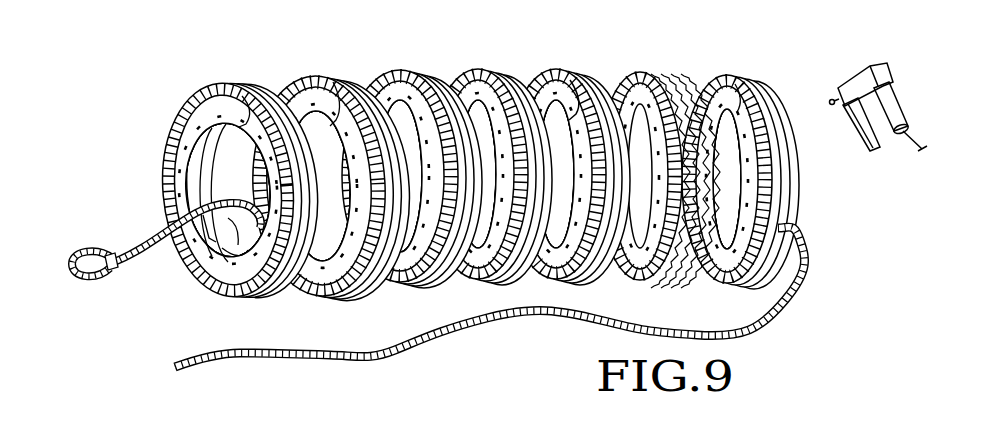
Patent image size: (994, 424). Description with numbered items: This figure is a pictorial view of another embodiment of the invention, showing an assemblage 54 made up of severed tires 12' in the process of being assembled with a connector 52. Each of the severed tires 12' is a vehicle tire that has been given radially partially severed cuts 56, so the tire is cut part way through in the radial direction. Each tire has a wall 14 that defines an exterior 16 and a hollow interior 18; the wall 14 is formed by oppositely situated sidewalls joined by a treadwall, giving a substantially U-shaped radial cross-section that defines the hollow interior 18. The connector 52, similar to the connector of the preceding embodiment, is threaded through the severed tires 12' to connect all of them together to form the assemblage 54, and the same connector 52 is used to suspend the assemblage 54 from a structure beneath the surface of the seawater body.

The wall 14 is at (213, 113).
The exterior 16 is at (167, 117).
The hollow interior 18 is at (225, 193).
The radially partially severed cuts 56 is at (242, 124).
The connector 52 is at (134, 266).
The severed tires 12' is at (515, 297).
The assemblage 54 is at (760, 66).